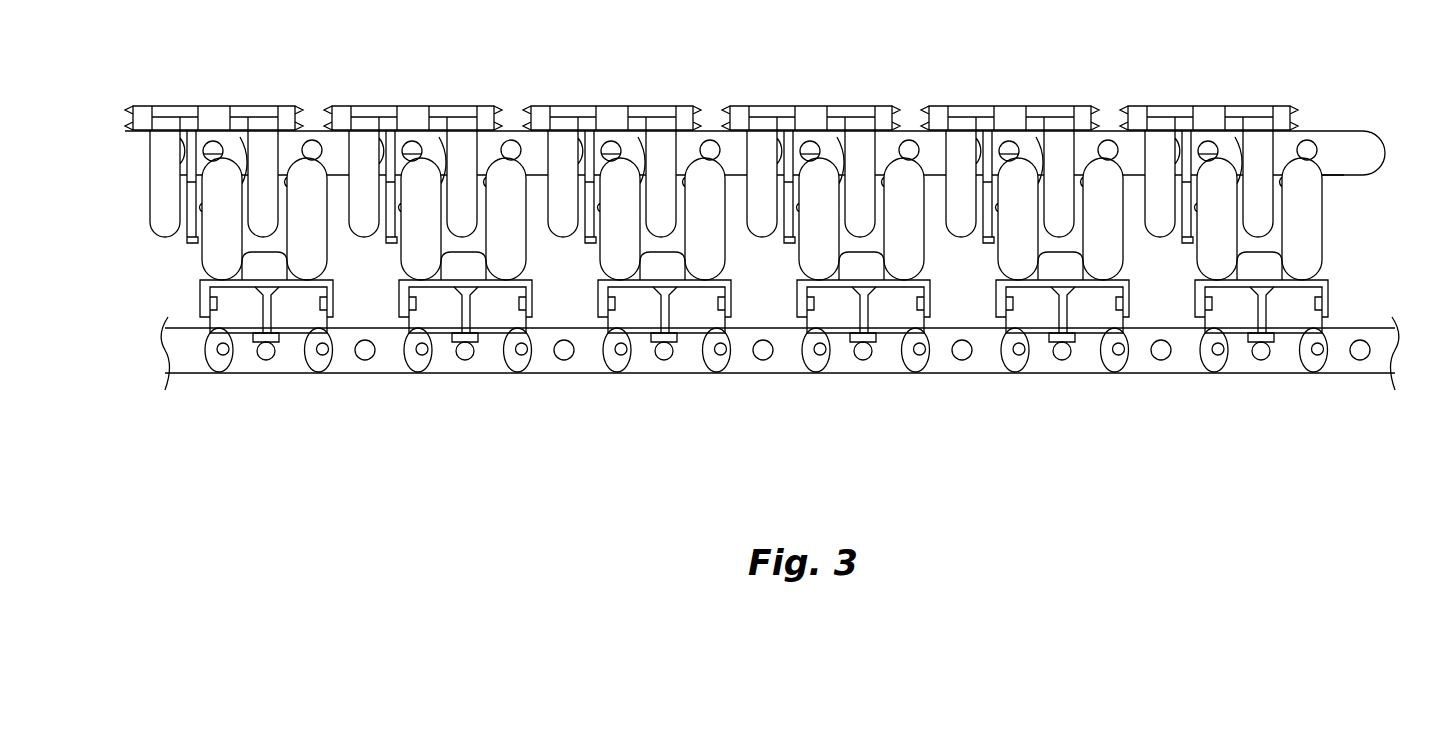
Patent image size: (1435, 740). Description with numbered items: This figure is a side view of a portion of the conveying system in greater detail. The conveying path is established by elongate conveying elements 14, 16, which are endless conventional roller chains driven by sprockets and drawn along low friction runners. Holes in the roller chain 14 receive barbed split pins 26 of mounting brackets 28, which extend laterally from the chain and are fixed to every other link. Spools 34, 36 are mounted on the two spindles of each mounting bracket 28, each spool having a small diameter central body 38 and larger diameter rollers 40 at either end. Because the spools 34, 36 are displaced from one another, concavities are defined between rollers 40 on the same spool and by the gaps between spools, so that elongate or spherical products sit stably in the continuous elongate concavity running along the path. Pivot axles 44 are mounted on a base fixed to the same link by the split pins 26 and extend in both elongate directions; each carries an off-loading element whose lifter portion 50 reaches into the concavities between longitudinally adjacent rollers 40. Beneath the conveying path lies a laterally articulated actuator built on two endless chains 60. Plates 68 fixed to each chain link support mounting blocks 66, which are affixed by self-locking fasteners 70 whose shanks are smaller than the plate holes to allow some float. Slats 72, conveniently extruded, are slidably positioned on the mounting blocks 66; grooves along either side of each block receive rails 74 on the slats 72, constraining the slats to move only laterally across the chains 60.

The elongate conveying element 14 is at (772, 124).
The elongate conveying element 16 is at (1345, 142).
The barbed split pin 26 is at (211, 142).
The mounting bracket 28 is at (386, 248).
The spool 34 is at (527, 218).
The spool 36 is at (552, 167).
The central body 38 is at (1257, 252).
The roller 40 is at (1323, 272).
The pivot axle 44 is at (897, 108).
The lifter portion 50 is at (568, 240).
The endless chain 60 is at (988, 360).
The mounting block 66 is at (1092, 323).
The plate 68 is at (896, 338).
The fastener 70 is at (852, 328).
The slat 72 is at (798, 310).
The rail 74 is at (212, 303).